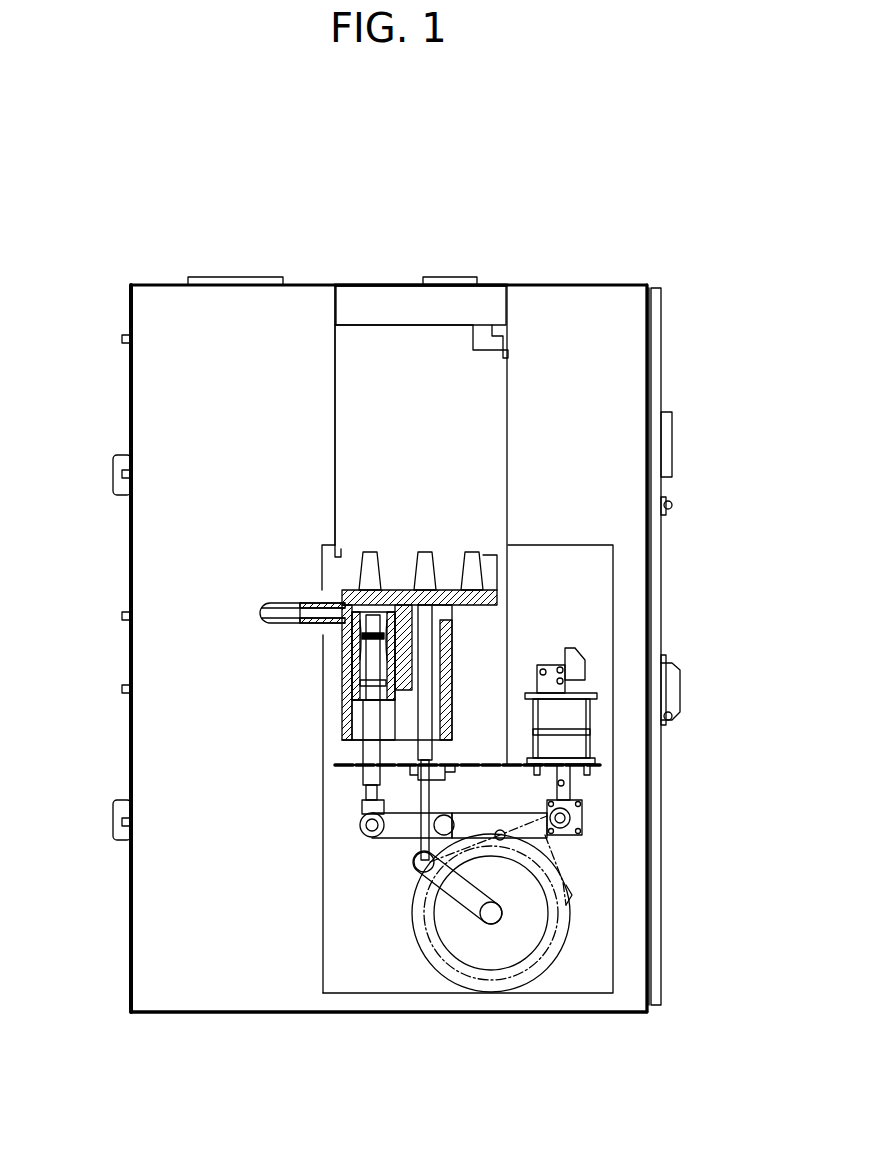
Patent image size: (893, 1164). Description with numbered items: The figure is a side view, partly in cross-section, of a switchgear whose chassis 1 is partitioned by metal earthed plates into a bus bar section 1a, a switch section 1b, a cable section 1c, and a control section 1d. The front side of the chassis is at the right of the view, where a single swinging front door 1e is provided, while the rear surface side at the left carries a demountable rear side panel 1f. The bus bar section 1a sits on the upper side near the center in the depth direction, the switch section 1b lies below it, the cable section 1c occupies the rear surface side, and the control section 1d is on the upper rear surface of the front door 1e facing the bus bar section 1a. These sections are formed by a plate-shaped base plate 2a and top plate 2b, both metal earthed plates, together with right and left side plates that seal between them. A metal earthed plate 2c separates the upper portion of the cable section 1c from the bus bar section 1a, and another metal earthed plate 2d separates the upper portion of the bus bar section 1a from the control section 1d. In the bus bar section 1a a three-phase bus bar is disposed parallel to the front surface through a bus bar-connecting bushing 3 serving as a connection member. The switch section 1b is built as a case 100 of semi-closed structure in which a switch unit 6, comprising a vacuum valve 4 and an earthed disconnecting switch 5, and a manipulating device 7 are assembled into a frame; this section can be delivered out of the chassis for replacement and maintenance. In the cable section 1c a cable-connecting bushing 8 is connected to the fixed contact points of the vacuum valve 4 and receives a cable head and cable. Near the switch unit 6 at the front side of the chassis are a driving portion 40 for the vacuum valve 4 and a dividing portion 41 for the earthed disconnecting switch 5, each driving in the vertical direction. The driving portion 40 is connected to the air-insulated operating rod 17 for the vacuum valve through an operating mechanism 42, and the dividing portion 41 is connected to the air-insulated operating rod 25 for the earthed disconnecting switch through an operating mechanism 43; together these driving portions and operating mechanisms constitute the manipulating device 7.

The chassis 1 is at (683, 242).
The bus bar section 1a is at (420, 350).
The switch section 1b is at (340, 820).
The cable section 1c is at (185, 355).
The control section 1d is at (615, 350).
The front door 1e is at (655, 372).
The rear side panel 1f is at (128, 385).
The base plate 2a is at (347, 283).
The top plate 2b is at (488, 1012).
The metal earthed plate 2c is at (330, 430).
The metal earthed plate 2d is at (510, 360).
The bus bar-connecting bushing 3 is at (487, 555).
The vacuum valve 4 is at (345, 657).
The earthed disconnecting switch 5 is at (410, 660).
The switch unit 6 is at (345, 645).
The manipulating device 7 is at (585, 778).
The cable-connecting bushing 8 is at (270, 604).
The air-insulated operating rod 17 is at (365, 747).
The air-insulated operating rod 25 is at (427, 718).
The driving portion 40 is at (573, 713).
The dividing portion 41 is at (583, 818).
The operating mechanism 42 is at (398, 823).
The operating mechanism 43 is at (418, 847).
The case 100 is at (613, 940).